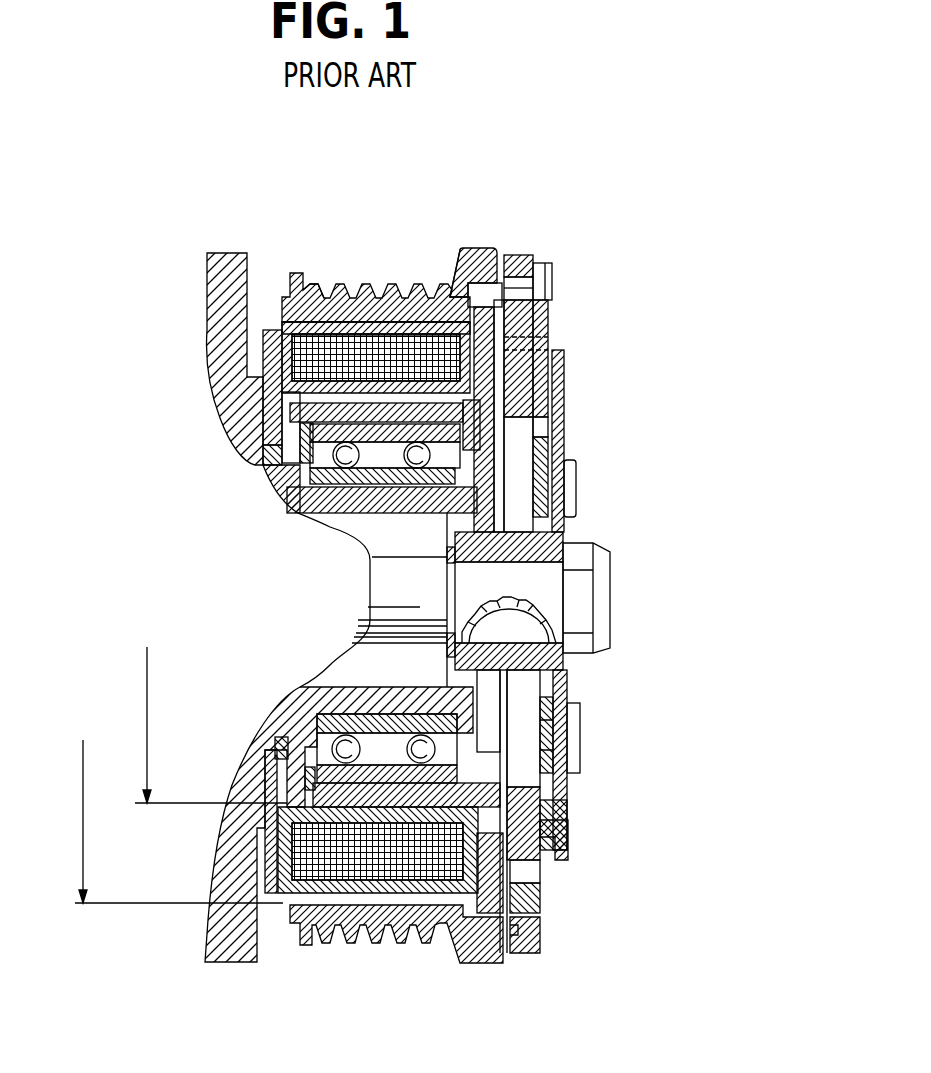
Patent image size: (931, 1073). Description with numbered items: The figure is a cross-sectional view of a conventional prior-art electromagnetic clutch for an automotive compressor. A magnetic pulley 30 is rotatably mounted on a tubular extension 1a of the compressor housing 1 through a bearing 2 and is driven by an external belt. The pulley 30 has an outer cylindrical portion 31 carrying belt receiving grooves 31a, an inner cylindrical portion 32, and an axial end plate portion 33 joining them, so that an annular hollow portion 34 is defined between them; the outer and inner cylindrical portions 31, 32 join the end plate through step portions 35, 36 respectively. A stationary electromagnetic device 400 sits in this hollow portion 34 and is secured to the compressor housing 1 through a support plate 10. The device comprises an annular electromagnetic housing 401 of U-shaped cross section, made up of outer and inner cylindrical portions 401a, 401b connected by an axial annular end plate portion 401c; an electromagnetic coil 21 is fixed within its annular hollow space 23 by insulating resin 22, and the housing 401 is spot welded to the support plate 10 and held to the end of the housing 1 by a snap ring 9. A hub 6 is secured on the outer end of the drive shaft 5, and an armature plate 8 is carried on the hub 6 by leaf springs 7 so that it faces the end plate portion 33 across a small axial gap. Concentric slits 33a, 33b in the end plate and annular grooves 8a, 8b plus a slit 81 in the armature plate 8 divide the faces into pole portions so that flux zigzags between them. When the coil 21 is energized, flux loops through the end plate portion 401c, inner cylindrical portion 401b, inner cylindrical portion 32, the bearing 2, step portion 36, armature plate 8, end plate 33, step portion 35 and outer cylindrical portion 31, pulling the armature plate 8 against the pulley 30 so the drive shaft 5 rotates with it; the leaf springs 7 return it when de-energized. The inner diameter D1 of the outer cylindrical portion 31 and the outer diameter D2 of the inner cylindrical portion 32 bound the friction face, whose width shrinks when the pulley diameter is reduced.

The compressor housing 1 is at (222, 253).
The tubular extension 1a is at (408, 514).
The bearing 2 is at (325, 513).
The drive shaft 5 is at (418, 607).
The hub 6 is at (567, 538).
The leaf springs 7 is at (547, 348).
The armature plate 8 is at (520, 272).
The annular shaped groove 8a is at (565, 843).
The annular shaped groove 8b is at (541, 929).
The snap ring 9 is at (268, 466).
The support plate 10 is at (268, 413).
The electromagnetic coil 21 is at (377, 323).
The insulating resin 22 is at (452, 272).
The annular hollow space 23 is at (275, 392).
The magnetic pulley 30 is at (440, 262).
The outer cylindrical portion 31 is at (347, 332).
The belt receiving grooves 31a is at (373, 293).
The inner cylindrical portion 32 is at (297, 491).
The axial end plate portion 33 is at (490, 313).
The concentric slit 33a is at (490, 823).
The concentric slit 33b is at (490, 928).
The annular hollow portion 34 is at (399, 323).
The step portion 35 is at (483, 252).
The step portion 36 is at (462, 445).
The slit 81 is at (541, 878).
The electromagnetic device 400 is at (262, 318).
The annular electromagnetic housing 401 is at (266, 318).
The outer cylindrical portion 401a is at (282, 322).
The inner cylindrical portion 401b is at (350, 414).
The axial annular end plate portion 401c is at (283, 370).
The inner diameter of outer cylindrical portion D1 is at (177, 803).
The outer diameter of inner cylindrical portion D2 is at (209, 707).